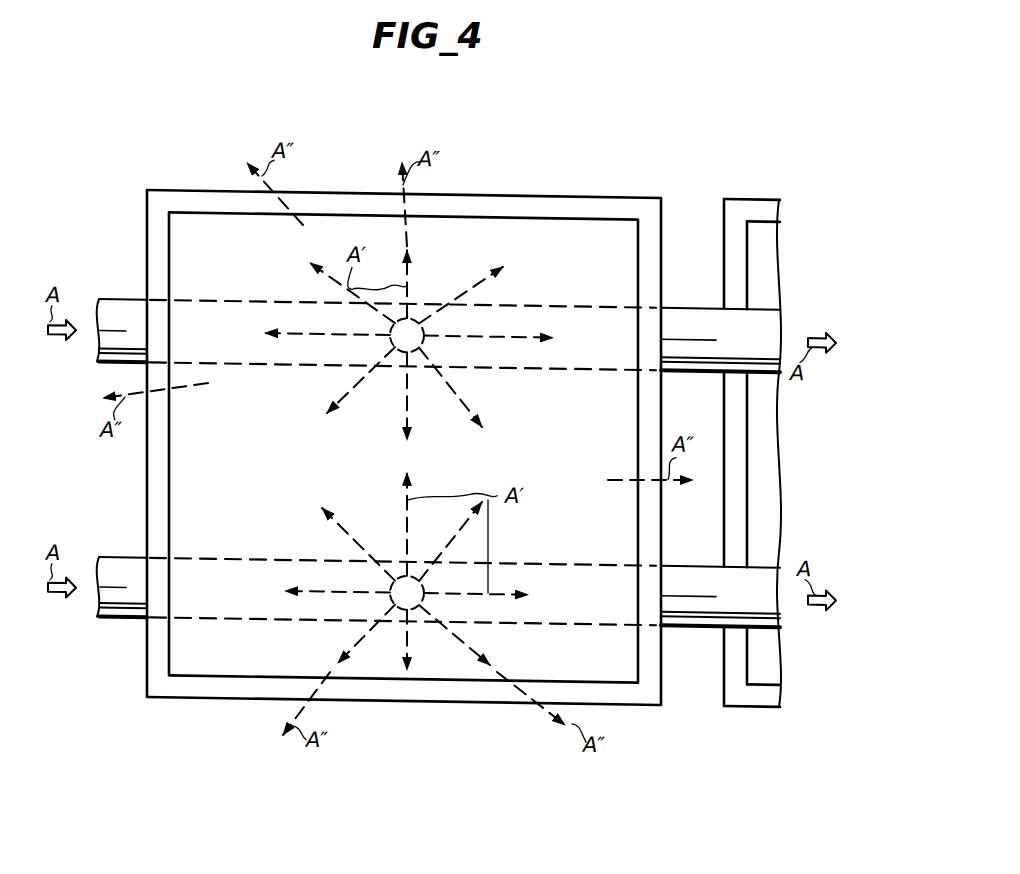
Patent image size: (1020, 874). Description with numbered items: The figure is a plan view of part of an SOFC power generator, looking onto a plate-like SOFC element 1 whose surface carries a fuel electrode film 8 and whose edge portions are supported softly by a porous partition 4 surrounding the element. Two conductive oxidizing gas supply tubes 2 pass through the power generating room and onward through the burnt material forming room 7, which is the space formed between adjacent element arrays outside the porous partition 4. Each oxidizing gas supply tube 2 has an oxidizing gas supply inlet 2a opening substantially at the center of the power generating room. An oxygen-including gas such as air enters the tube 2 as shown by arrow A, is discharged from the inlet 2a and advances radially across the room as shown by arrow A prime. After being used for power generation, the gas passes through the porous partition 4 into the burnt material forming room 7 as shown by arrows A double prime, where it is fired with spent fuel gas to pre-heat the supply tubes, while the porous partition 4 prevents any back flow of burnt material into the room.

The plate-like SOFC element 1 is at (565, 207).
The conductive oxidizing gas supply tube 2 is at (122, 298).
The oxidizing gas supply inlet 2a is at (422, 338).
The porous partition 4 is at (462, 188).
The burnt material forming room 7 is at (698, 254).
The fuel electrode film 8 is at (497, 224).